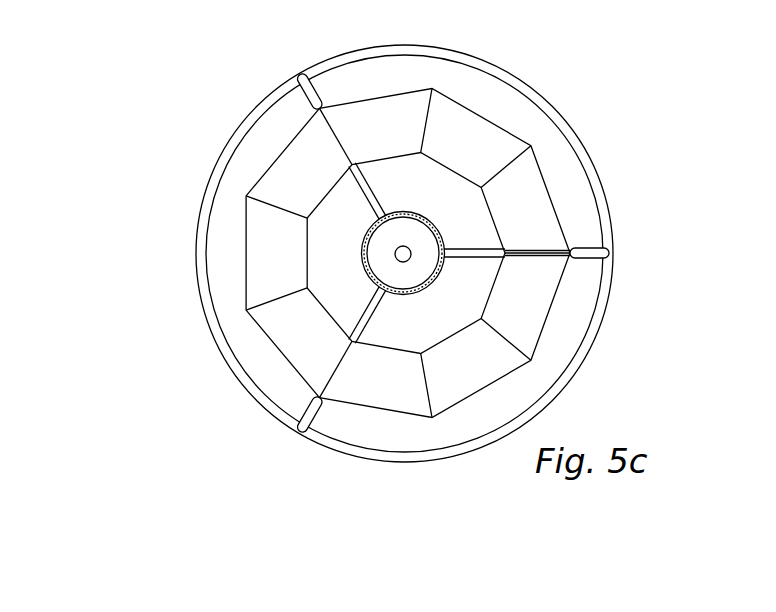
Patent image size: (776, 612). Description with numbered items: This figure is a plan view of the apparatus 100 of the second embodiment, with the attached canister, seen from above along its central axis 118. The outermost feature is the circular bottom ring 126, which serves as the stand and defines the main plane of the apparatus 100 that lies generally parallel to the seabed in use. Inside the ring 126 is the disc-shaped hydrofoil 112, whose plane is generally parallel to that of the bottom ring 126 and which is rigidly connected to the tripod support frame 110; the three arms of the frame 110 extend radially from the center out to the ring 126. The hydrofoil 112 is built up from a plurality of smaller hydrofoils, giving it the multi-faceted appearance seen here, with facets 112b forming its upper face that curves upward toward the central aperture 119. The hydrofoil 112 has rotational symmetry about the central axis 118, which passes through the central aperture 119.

The apparatus 100 is at (436, 253).
The tripod support frame 110 is at (600, 251).
The hydrofoil 112 is at (495, 123).
The reflector facet 112b is at (505, 357).
The central axis 118 is at (395, 255).
The central aperture 119 is at (473, 215).
The bottom ring 126 is at (610, 213).